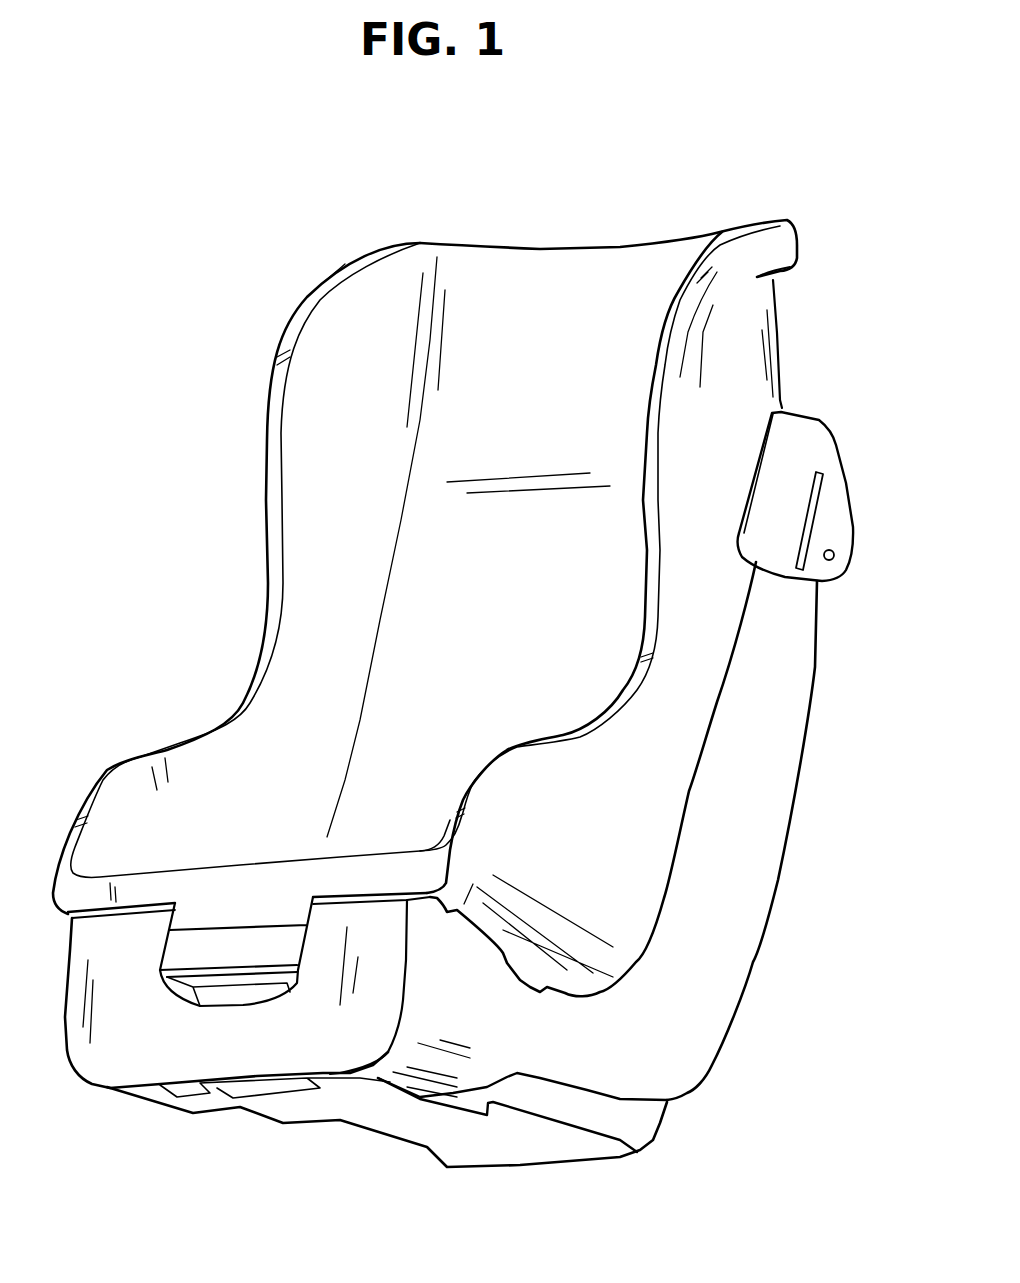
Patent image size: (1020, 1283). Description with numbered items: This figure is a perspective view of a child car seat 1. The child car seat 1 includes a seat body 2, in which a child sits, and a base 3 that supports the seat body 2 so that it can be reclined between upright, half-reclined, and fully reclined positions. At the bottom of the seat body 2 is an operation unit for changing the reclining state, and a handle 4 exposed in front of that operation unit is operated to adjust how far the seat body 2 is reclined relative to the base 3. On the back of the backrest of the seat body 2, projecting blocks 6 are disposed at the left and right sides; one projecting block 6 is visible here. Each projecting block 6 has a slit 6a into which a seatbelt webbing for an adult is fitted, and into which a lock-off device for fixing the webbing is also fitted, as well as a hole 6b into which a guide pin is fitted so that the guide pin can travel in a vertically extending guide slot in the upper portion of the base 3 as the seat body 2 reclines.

The child car seat 1 is at (724, 168).
The seat body 2 is at (557, 284).
The base 3 is at (735, 969).
The handle 4 is at (202, 955).
The projecting block 6 is at (833, 505).
The slit 6a is at (805, 523).
The hole 6b is at (835, 555).